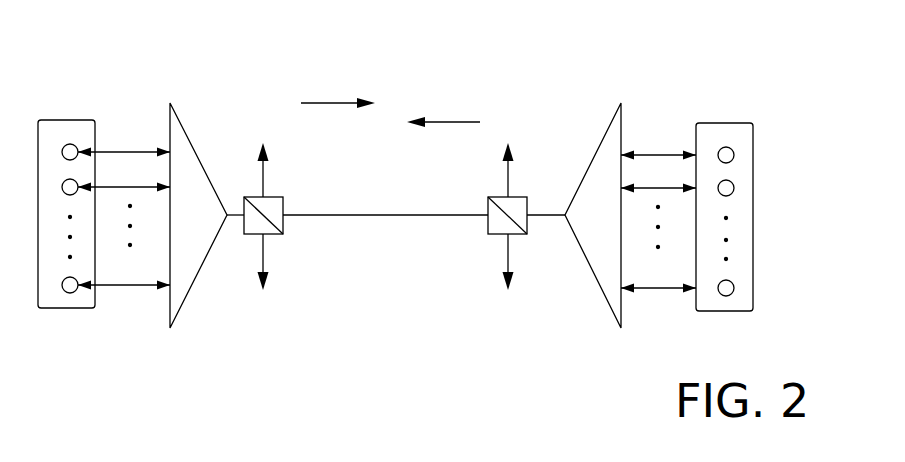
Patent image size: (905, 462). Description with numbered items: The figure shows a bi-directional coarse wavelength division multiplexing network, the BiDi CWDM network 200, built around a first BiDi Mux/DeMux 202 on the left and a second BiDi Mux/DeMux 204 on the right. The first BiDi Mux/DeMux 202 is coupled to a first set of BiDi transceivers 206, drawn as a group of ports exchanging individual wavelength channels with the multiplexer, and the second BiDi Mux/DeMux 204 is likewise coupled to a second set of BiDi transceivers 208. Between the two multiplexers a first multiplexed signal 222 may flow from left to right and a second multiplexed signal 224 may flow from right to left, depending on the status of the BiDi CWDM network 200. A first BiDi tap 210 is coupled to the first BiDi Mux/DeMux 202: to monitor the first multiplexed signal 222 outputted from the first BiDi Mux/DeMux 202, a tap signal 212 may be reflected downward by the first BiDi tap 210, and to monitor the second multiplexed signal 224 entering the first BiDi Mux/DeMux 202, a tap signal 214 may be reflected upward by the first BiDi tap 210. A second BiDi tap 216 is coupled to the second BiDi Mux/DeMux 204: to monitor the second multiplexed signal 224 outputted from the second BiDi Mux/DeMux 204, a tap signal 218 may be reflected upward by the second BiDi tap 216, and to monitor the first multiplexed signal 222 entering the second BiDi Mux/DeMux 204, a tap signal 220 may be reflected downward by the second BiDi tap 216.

The BiDi CWDM network 200 is at (128, 34).
The first BiDi Mux/DeMux 202 is at (190, 137).
The second BiDi Mux/DeMux 204 is at (621, 120).
The first set of BiDi transceivers 206 is at (78, 120).
The second set of BiDi transceivers 208 is at (735, 123).
The first BiDi tap 210 is at (283, 227).
The tap signal 212 is at (263, 252).
The tap signal 214 is at (263, 178).
The second BiDi tap 216 is at (488, 227).
The tap signal 218 is at (507, 188).
The tap signal 220 is at (508, 252).
The first multiplexed signal 222 is at (330, 103).
The second multiplexed signal 224 is at (452, 122).